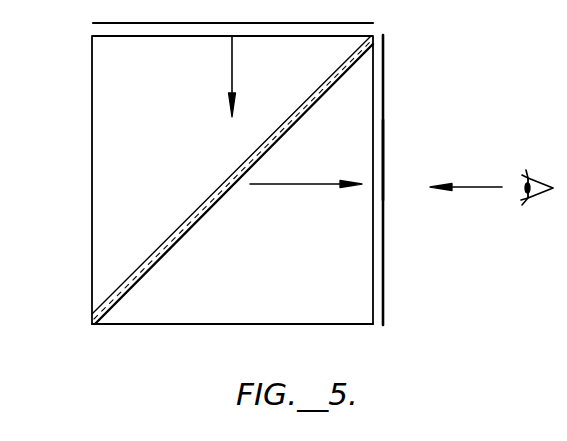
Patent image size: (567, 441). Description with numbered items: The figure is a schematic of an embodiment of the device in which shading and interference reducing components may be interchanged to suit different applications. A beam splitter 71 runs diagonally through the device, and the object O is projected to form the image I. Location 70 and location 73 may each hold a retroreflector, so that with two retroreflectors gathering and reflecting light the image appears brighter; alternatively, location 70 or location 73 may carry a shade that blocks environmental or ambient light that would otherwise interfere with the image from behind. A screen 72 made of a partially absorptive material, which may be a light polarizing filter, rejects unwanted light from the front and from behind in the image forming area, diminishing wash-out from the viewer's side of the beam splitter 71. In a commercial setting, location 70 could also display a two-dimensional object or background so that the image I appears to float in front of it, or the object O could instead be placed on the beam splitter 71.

The location 70 is at (92, 162).
The beam splitter 71 is at (316, 83).
The screen 72 is at (386, 65).
The location 73 is at (318, 325).
The object O is at (250, 22).
The image I is at (385, 153).